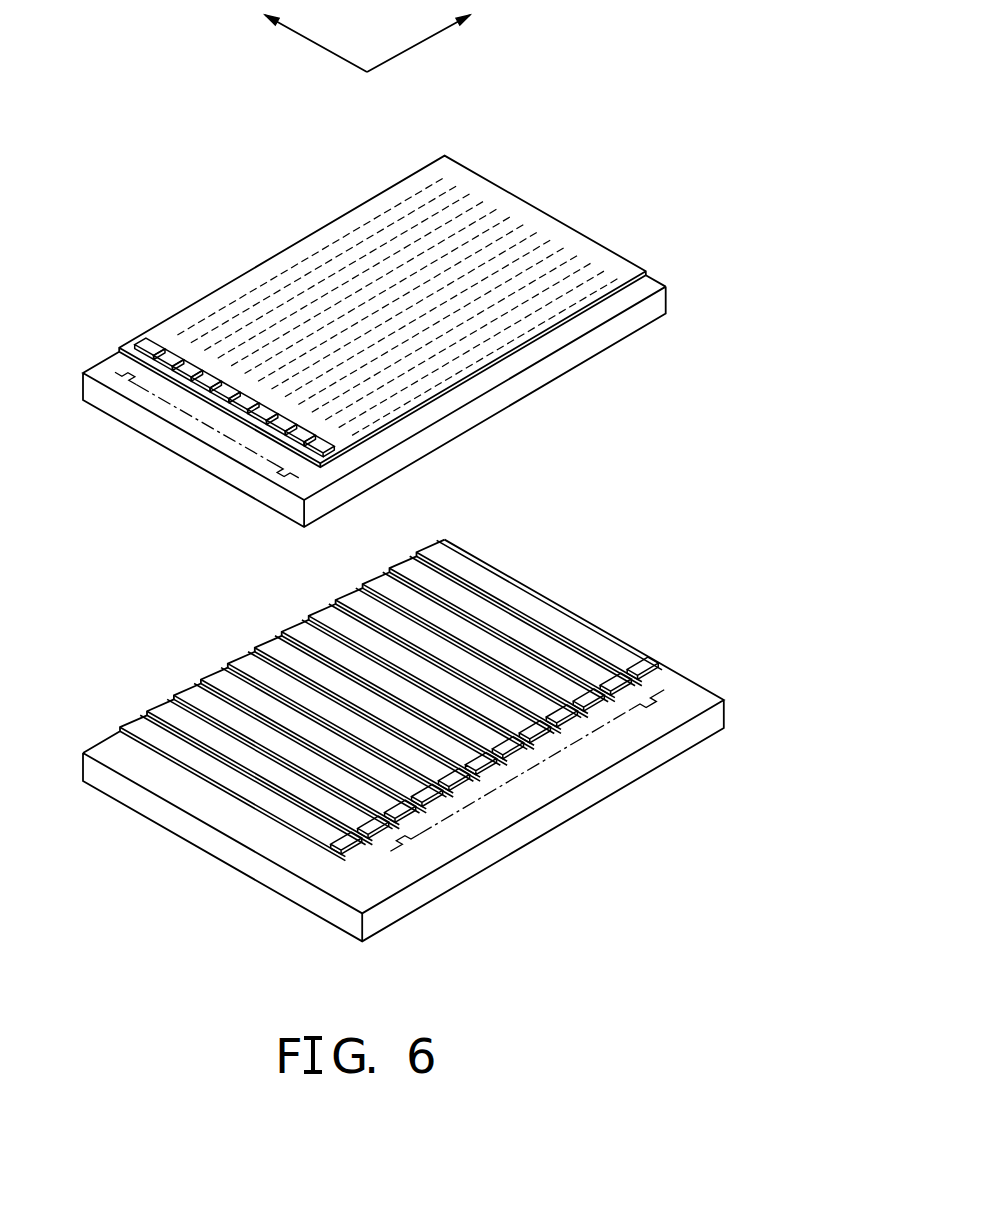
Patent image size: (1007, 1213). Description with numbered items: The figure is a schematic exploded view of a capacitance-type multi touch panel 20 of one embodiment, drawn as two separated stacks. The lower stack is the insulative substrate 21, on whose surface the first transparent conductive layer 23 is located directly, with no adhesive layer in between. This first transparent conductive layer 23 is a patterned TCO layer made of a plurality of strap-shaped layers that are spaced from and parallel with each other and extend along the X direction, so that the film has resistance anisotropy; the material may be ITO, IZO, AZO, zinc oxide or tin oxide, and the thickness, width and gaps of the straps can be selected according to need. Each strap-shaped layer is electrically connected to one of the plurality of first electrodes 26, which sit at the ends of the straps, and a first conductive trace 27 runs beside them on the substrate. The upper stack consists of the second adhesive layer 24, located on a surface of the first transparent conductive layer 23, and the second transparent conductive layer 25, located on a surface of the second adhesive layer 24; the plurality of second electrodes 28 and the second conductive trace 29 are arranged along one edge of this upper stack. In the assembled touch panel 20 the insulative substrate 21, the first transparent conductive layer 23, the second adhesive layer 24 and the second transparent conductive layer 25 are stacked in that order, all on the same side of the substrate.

The capacitance-type multi touch panel 20 is at (230, 100).
The insulative substrate 21 is at (717, 724).
The first transparent conductive layer 23 is at (537, 603).
The second adhesive layer 24 is at (653, 307).
The second transparent conductive layer 25 is at (638, 272).
The first electrodes 26 is at (638, 670).
The first conductive trace 27 is at (678, 686).
The second electrodes 28 is at (148, 345).
The second conductive trace 29 is at (110, 367).